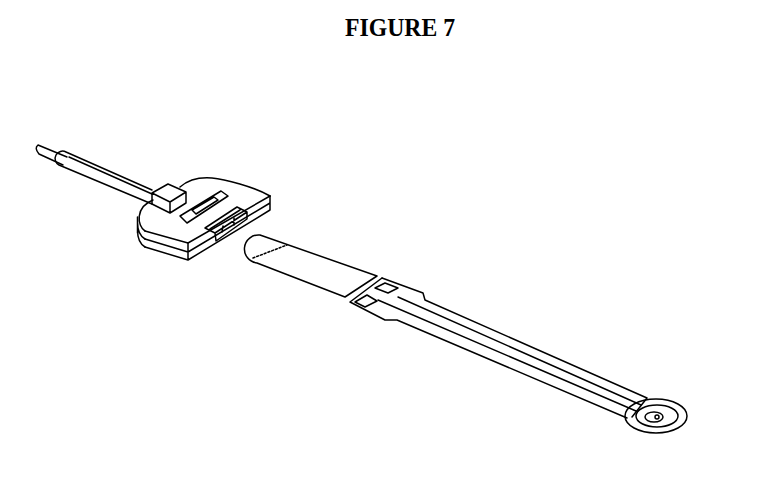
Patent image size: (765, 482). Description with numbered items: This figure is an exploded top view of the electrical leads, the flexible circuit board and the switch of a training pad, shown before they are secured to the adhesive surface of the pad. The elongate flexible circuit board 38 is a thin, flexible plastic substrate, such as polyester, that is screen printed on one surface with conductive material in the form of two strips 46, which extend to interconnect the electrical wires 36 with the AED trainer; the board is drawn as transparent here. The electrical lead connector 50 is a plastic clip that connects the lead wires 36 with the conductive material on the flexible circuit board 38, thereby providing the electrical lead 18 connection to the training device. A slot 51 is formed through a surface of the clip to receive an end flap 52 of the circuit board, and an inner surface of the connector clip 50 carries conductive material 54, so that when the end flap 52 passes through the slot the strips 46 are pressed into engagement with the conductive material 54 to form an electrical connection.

The electrical lead 18 is at (469, 153).
The electrical lead wires 36 is at (96, 157).
The elongate flexible circuit board 38 is at (567, 317).
The conductive material strips 46 is at (460, 338).
The electrical lead connector 50 is at (253, 163).
The slot 51 is at (207, 202).
The end flap 52 is at (308, 258).
The conductive material 54 is at (213, 232).